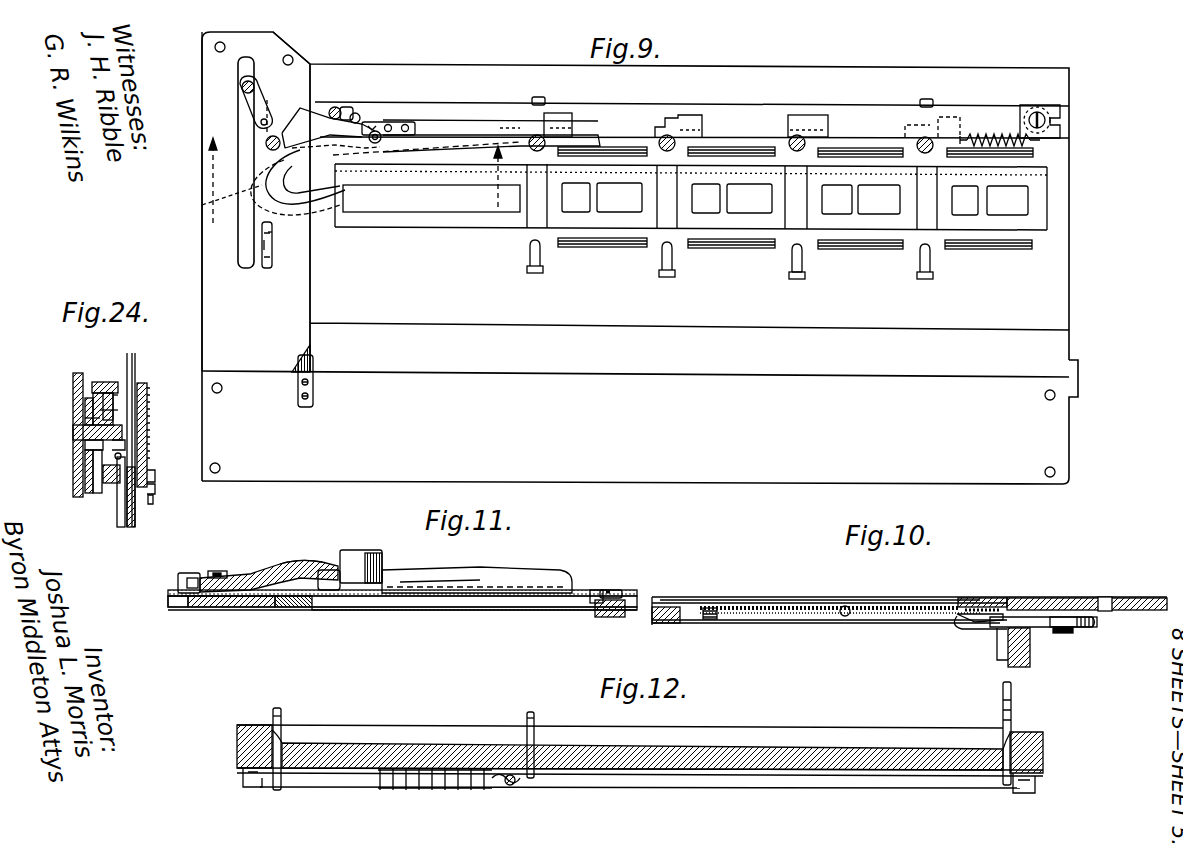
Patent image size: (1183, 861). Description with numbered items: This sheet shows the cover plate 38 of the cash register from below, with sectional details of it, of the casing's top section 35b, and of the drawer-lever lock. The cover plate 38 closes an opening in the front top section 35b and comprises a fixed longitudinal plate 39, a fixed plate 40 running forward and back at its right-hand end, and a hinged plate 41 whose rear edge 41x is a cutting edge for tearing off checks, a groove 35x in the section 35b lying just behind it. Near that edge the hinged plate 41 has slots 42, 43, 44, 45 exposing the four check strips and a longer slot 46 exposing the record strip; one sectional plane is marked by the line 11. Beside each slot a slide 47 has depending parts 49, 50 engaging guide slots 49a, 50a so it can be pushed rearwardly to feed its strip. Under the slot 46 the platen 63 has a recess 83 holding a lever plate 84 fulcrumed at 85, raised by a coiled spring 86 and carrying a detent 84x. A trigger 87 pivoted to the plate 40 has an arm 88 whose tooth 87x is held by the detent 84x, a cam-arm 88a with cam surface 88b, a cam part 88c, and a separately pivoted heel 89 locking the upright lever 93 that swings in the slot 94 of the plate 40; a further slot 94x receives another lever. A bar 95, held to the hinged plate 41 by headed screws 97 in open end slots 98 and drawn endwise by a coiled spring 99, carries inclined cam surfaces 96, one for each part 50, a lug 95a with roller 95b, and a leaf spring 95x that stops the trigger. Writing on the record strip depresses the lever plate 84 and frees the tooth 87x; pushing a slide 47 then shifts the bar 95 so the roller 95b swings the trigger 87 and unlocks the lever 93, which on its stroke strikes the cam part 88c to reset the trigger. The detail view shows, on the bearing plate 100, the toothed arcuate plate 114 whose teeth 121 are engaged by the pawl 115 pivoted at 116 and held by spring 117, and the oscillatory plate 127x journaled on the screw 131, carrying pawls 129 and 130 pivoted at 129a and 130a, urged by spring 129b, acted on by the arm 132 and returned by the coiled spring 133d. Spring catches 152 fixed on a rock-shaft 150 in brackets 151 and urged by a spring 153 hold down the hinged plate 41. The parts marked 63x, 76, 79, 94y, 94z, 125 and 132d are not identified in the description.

In FIG. 9, the cover plate 38 is at (1074, 278).
In FIG. 9, the fixed plate 39 is at (1055, 433).
In FIG. 9, the fixed plate 40 is at (202, 273).
In FIG. 11, the fixed plate 40 is at (232, 608).
In FIG. 10, the fixed plate 40 is at (1130, 598).
In FIG. 9, the hinged plate 41 is at (1053, 312).
In FIG. 11, the hinged plate 41 is at (455, 610).
In FIG. 10, the hinged plate 41 is at (983, 598).
In FIG. 9, the rear edge 41x is at (742, 66).
In FIG. 9, the slot 42 is at (975, 210).
In FIG. 9, the slot 43 is at (888, 208).
In FIG. 9, the slot 44 is at (716, 205).
In FIG. 9, the slot 45 is at (584, 205).
In FIG. 9, the slot 46 is at (402, 210).
In FIG. 10, the slot 46 is at (835, 598).
In FIG. 11, the slide 47 is at (602, 617).
In FIG. 9, the depending part 49 is at (527, 271).
In FIG. 9, the guide slot 49a is at (530, 256).
In FIG. 9, the depending part 50 is at (570, 128).
In FIG. 11, the depending part 50 is at (615, 590).
In FIG. 9, the guide slot 50a is at (560, 128).
In FIG. 10, the platen 63 is at (664, 614).
In FIG. 9, the frame 63x is at (460, 222).
In FIG. 10, the bar 76 is at (910, 600).
In FIG. 9, the post 79 is at (796, 279).
In FIG. 10, the recess 83 is at (955, 629).
In FIG. 10, the lever plate 84 is at (800, 614).
In FIG. 10, the detent 84x is at (995, 608).
In FIG. 10, the fulcrum 85 is at (846, 617).
In FIG. 10, the coiled spring 86 is at (712, 619).
In FIG. 9, the trigger 87 is at (303, 132).
In FIG. 11, the trigger 87 is at (250, 570).
In FIG. 10, the trigger 87 is at (1098, 635).
In FIG. 10, the tooth 87x is at (978, 624).
In FIG. 9, the arm 88 is at (250, 203).
In FIG. 10, the arm 88 is at (1040, 628).
In FIG. 9, the cam-arm 88a is at (312, 160).
In FIG. 11, the cam-arm 88a is at (283, 562).
In FIG. 9, the cam surface 88b is at (360, 114).
In FIG. 9, the cam part 88c is at (230, 185).
In FIG. 9, the heel 89 is at (276, 102).
In FIG. 11, the heel 89 is at (208, 572).
In FIG. 9, the upright lever 93 is at (242, 87).
In FIG. 24, the upright lever 93 is at (134, 368).
In FIG. 9, the slot 94 is at (238, 118).
In FIG. 11, the slot 94 is at (178, 610).
In FIG. 9, the slot 94x is at (275, 232).
In FIG. 9, the slot end 94y is at (273, 262).
In FIG. 9, the slot end 94z is at (268, 232).
In FIG. 9, the movable bar 95 is at (476, 106).
In FIG. 11, the movable bar 95 is at (340, 610).
In FIG. 9, the lug 95a is at (412, 122).
In FIG. 11, the lug 95a is at (350, 550).
In FIG. 9, the roller 95b is at (380, 130).
In FIG. 11, the roller 95b is at (374, 553).
In FIG. 9, the leaf spring 95x is at (475, 138).
In FIG. 11, the leaf spring 95x is at (450, 580).
In FIG. 9, the cam surface 96 is at (531, 137).
In FIG. 11, the cam surface 96 is at (594, 590).
In FIG. 9, the headed screw 97 is at (336, 106).
In FIG. 11, the headed screw 97 is at (292, 600).
In FIG. 9, the open slot 98 is at (354, 108).
In FIG. 9, the coiled spring 99 is at (990, 130).
In FIG. 24, the bearing plate 100 is at (73, 382).
In FIG. 10, the bearing plate 100 is at (1030, 666).
In FIG. 9, the section arrows 11 is at (356, 195).
In FIG. 24, the toothed arcuate plate 114 is at (147, 388).
In FIG. 24, the pawl 115 is at (155, 472).
In FIG. 24, the pivot 116 is at (155, 488).
In FIG. 24, the spring 117 is at (153, 502).
In FIG. 24, the teeth 121 is at (140, 432).
In FIG. 24, the bar 125 is at (117, 518).
In FIG. 24, the oscillatory plate 127x is at (85, 404).
In FIG. 24, the pawl 129 is at (106, 484).
In FIG. 24, the pivot 129a is at (100, 452).
In FIG. 24, the spring 129b is at (121, 454).
In FIG. 24, the pawl 130 is at (106, 380).
In FIG. 24, the pivot 130a is at (118, 393).
In FIG. 24, the screw 131 is at (85, 438).
In FIG. 24, the arm 132 is at (85, 418).
In FIG. 24, the spring end 132d is at (118, 410).
In FIG. 24, the coiled spring 133d is at (85, 480).
In FIG. 12, the rock-shaft 150 is at (338, 778).
In FIG. 12, the bracket 151 is at (250, 783).
In FIG. 12, the spring catch 152 is at (281, 710).
In FIG. 12, the spring 153 is at (452, 792).
In FIG. 12, the front top section 35b is at (250, 724).
In FIG. 12, the groove 35x is at (826, 726).